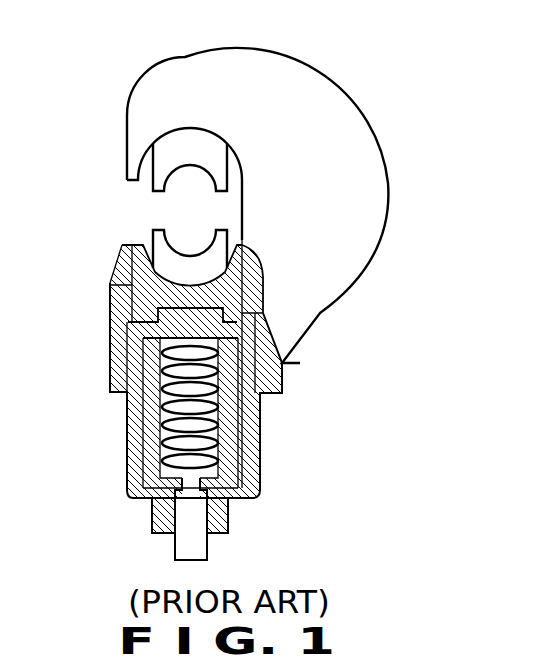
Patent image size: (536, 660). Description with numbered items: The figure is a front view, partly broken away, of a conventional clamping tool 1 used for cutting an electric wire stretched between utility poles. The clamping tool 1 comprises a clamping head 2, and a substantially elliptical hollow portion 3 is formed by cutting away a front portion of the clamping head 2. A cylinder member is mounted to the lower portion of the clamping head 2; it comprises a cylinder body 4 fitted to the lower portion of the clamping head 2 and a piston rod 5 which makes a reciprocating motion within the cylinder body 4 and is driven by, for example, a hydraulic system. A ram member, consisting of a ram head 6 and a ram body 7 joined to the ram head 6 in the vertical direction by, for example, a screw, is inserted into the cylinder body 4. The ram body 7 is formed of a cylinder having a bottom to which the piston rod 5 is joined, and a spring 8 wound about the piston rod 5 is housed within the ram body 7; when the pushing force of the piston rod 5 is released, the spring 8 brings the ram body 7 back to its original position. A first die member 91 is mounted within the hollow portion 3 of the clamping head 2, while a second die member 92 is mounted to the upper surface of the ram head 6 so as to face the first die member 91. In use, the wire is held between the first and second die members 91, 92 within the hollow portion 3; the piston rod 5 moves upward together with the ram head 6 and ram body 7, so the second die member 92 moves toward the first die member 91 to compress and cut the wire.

The clamping tool 1 is at (307, 41).
The clamping head 2 is at (357, 127).
The hollow portion 3 is at (170, 210).
The cylinder body 4 is at (257, 450).
The piston rod 5 is at (152, 502).
The ram head 6 is at (132, 285).
The ram body 7 is at (130, 322).
The spring 8 is at (165, 410).
The first die member 91 is at (193, 148).
The second die member 92 is at (160, 242).